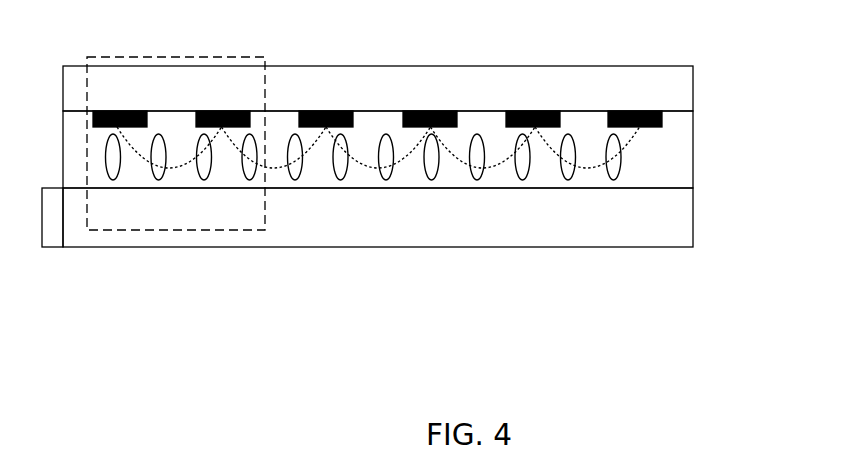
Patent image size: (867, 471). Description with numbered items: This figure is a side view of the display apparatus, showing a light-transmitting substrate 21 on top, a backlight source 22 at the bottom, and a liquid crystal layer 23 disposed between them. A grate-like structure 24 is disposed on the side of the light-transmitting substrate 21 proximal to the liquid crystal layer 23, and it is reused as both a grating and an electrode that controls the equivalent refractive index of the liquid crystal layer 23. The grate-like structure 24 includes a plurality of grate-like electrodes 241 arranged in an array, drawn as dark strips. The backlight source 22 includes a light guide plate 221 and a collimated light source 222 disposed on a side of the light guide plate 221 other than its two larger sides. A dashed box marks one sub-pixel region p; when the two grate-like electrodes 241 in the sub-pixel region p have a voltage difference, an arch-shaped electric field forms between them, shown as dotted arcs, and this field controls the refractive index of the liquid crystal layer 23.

The light-transmitting substrate 21 is at (695, 73).
The backlight source 22 is at (366, 282).
The light guide plate 221 is at (110, 250).
The collimated light source 222 is at (52, 250).
The liquid crystal layer 23 is at (695, 152).
The grate-like structure 24 is at (427, 77).
The grate-like electrode 241 is at (116, 109).
The sub-pixel region p is at (165, 56).